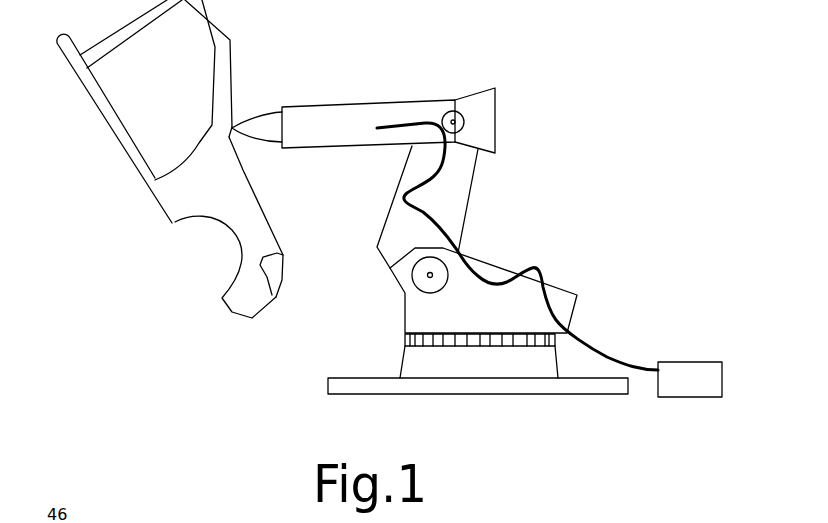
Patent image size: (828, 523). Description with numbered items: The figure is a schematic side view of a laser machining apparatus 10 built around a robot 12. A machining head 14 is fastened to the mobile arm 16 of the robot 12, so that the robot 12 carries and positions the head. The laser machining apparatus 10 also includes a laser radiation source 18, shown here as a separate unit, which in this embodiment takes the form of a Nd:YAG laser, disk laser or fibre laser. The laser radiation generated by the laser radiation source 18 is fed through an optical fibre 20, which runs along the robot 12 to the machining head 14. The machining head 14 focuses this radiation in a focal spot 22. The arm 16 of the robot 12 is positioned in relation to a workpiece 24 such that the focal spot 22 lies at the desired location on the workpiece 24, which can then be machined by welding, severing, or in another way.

The laser machining apparatus 10 is at (477, 223).
The robot 12 is at (401, 294).
The machining head 14 is at (268, 117).
The mobile arm 16 is at (363, 101).
The laser radiation source 18 is at (700, 367).
The optical fibre 20 is at (597, 347).
The focal spot 22 is at (232, 127).
The workpiece 24 is at (247, 192).